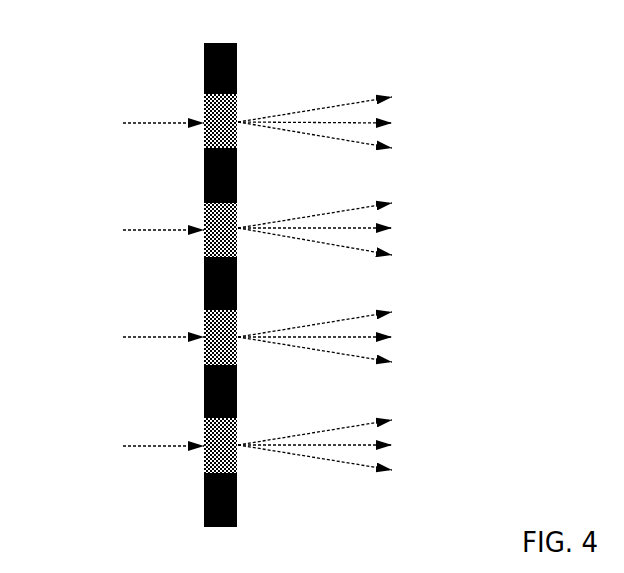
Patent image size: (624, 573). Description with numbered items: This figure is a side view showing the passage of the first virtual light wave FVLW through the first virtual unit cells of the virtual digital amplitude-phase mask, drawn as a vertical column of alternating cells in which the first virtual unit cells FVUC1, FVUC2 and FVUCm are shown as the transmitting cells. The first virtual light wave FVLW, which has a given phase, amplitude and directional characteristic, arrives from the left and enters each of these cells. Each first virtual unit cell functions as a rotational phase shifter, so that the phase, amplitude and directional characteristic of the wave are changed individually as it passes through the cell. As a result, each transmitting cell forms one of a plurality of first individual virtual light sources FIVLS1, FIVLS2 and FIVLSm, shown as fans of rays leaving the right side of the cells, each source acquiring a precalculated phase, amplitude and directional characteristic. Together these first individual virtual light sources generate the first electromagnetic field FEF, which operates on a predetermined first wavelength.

The first virtual unit cell FVUC1 is at (204, 100).
The first virtual unit cell FVUC2 is at (204, 213).
The first virtual unit cell FVUCm is at (204, 420).
The first virtual light wave FVLW is at (124, 238).
The first individual virtual light source FIVLS1 is at (240, 118).
The first individual virtual light source FIVLS2 is at (240, 226).
The first individual virtual light source FIVLSm is at (243, 440).
The first electromagnetic field FEF is at (410, 228).